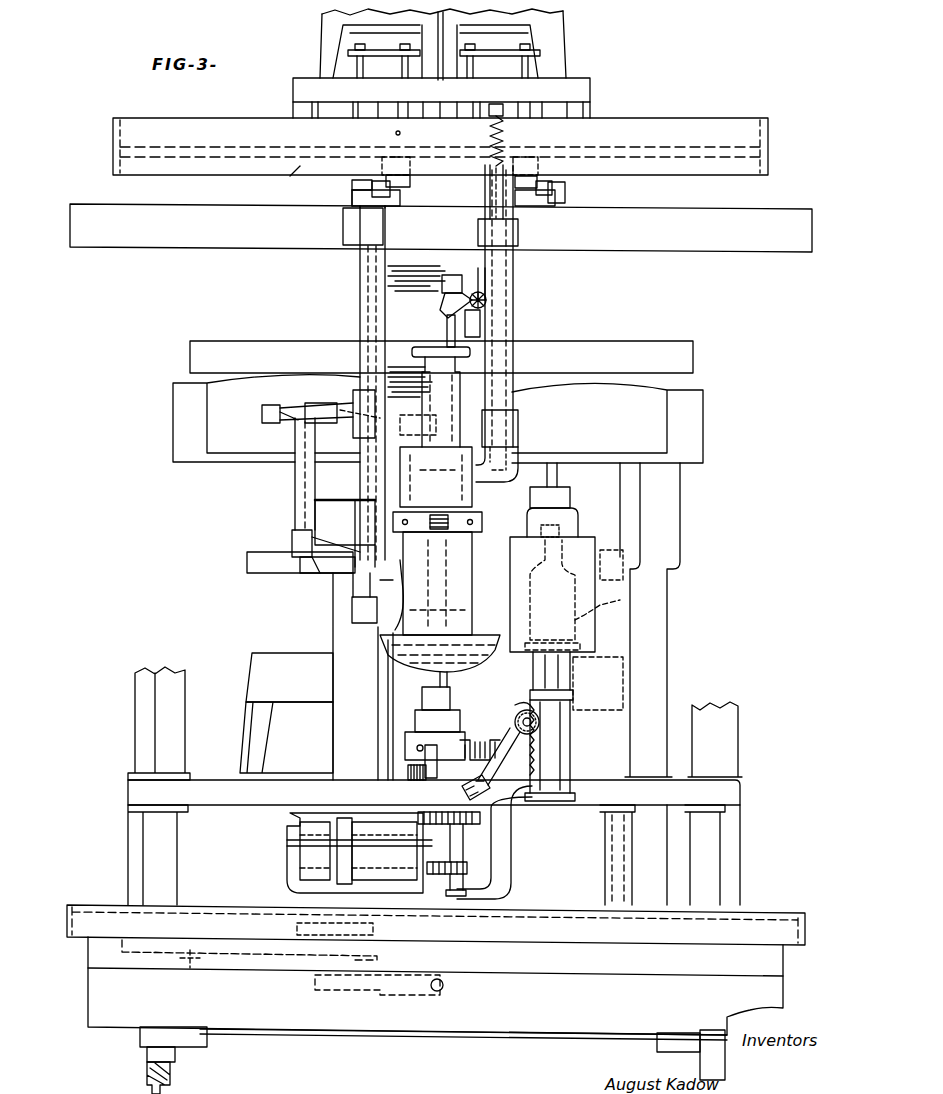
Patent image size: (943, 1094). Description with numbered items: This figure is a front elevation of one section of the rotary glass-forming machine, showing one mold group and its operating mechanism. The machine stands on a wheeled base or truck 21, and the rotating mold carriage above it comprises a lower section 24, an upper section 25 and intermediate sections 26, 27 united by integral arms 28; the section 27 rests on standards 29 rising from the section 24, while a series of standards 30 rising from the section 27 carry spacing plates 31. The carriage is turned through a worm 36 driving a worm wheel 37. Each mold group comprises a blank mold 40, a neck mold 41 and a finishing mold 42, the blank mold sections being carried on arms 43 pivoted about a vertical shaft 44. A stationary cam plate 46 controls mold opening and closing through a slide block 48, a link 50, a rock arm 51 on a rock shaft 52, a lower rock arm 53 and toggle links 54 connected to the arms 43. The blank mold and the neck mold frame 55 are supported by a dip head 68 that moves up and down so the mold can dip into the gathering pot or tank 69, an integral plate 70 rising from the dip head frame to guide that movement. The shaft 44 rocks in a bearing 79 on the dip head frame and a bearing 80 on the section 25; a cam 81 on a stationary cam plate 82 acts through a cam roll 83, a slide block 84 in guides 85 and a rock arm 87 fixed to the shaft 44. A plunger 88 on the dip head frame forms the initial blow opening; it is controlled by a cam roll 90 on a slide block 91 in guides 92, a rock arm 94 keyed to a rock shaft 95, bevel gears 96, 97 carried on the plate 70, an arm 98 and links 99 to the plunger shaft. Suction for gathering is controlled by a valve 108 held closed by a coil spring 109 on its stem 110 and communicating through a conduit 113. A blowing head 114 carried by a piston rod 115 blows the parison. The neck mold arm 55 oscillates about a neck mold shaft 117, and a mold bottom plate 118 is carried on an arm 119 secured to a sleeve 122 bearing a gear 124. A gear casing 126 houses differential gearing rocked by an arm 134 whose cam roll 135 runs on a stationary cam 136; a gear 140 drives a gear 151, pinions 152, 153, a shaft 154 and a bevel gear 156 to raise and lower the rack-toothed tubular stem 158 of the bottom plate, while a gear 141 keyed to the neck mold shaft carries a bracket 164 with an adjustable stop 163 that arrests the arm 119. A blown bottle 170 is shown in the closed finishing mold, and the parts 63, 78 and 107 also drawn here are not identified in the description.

The wheeled base or truck 21 is at (88, 1000).
The lower section of mold carriage 24 is at (98, 888).
The upper section of mold carriage 25 is at (230, 252).
The intermediate section of mold carriage 26 is at (268, 653).
The intermediate section of mold carriage 27 is at (215, 780).
The integral arms 28 is at (262, 740).
The standards 29 is at (177, 848).
The standards 30 is at (135, 705).
The spacing plates 31 is at (205, 462).
The worm 36 is at (443, 985).
The worm wheel 37 is at (410, 995).
The blank mold 40 is at (472, 596).
The neck mold 41 is at (475, 512).
The finishing mold 42 is at (588, 545).
The mold arms 43 is at (400, 600).
The vertical shaft 44 is at (360, 286).
The stationary cam plate 46 is at (205, 328).
The slide block 48 is at (380, 372).
The link 50 is at (330, 388).
The rock arm 51 is at (290, 428).
The rock shaft 52 is at (295, 478).
The rock arm 53 is at (292, 540).
The toggle links 54 is at (318, 575).
The neck mold frame 55 is at (482, 524).
The arm 63 is at (247, 560).
The dip head 68 is at (418, 450).
The gathering pot or tank 69 is at (410, 650).
The integral plate 70 is at (400, 275).
The block 78 is at (365, 623).
The bearing 79 is at (340, 522).
The bearing 80 is at (383, 226).
The cam 81 is at (289, 177).
The stationary cam plate 82 is at (113, 148).
The cam roll 83 is at (410, 163).
The slide block 84 is at (410, 186).
The guides 85 is at (400, 200).
The rock arm 87 is at (352, 185).
The plunger 88 is at (428, 480).
The cam roll 90 is at (538, 163).
The slide block 91 is at (565, 197).
The guides 92 is at (552, 185).
The rock arm 94 is at (520, 200).
The rock shaft 95 is at (485, 277).
The bevel gear 96 is at (480, 322).
The bevel gear 97 is at (486, 298).
The arm 98 is at (440, 298).
The links 99 is at (447, 328).
The hopper 107 is at (560, 78).
The valve 108 is at (520, 456).
The coil spring 109 is at (505, 140).
The valve stem 110 is at (518, 230).
The conduit 113 is at (513, 397).
The blowing head 114 is at (570, 500).
The piston rod 115 is at (557, 475).
The neck mold shaft 117 is at (422, 683).
The mold bottom plate 118 is at (590, 630).
The mold bottom arm 119 is at (511, 868).
The tubular shaft or sleeve 122 is at (450, 850).
The gear 124 is at (466, 885).
The gear casing 126 is at (300, 822).
The arm 134 is at (297, 929).
The cam roll 135 is at (340, 962).
The stationary cam 136 is at (190, 968).
The gear 140 is at (415, 838).
The gear 141 is at (408, 772).
The gear 151 is at (480, 820).
The pinion 152 is at (462, 790).
The pinion 153 is at (485, 800).
The shaft 154 is at (570, 757).
The bevel gear 156 is at (520, 700).
The tubular stem 158 is at (533, 672).
The adjustable stop 163 is at (417, 748).
The bracket 164 is at (425, 758).
The blown bottle 170 is at (520, 612).